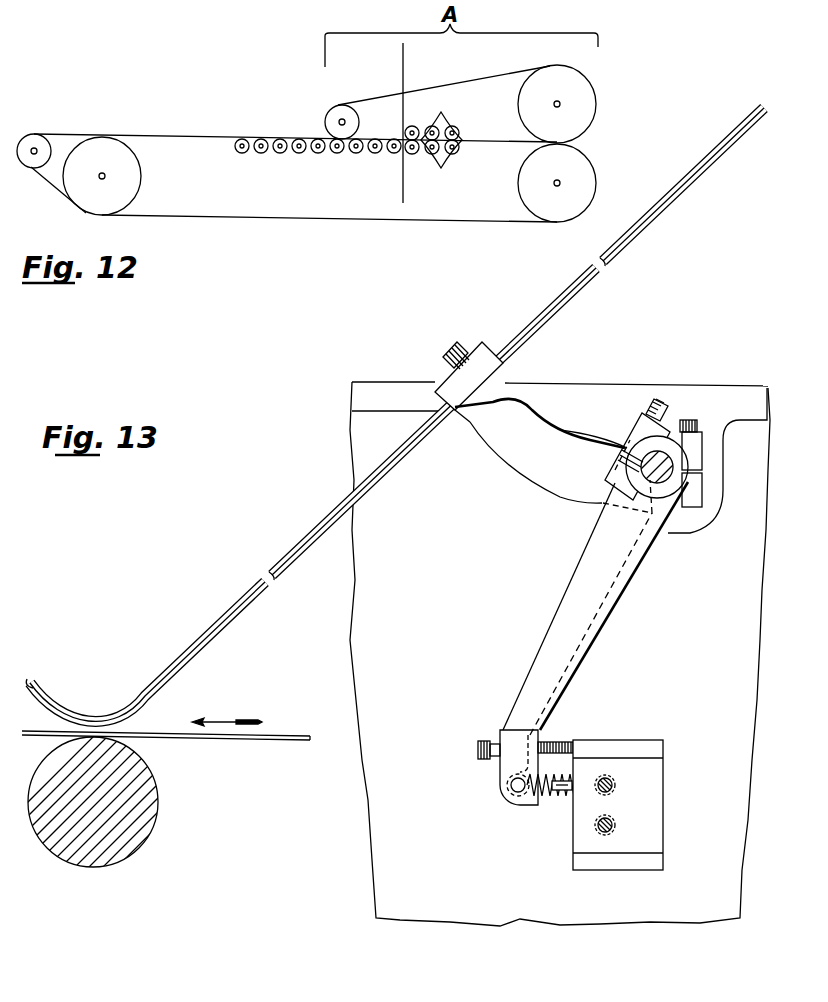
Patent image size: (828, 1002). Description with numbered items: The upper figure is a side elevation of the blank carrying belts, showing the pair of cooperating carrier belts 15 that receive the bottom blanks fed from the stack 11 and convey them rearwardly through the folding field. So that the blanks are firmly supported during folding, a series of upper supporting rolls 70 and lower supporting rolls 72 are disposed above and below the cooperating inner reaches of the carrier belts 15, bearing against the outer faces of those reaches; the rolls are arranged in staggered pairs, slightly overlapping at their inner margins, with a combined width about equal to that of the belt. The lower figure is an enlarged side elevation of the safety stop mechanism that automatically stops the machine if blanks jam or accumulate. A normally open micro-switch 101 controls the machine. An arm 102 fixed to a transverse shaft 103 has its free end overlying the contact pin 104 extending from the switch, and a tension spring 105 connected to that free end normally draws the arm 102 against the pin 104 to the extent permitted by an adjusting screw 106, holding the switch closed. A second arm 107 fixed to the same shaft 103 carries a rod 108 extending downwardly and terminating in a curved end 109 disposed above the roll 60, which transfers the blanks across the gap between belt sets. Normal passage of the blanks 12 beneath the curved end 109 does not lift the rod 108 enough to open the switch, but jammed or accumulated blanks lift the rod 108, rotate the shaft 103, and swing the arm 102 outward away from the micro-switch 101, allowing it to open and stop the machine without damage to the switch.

In FIG. 12, the stack 11 is at (399, 63).
In FIG. 12, the carrier belts 15 is at (200, 134).
In FIG. 12, the upper supporting rolls 70 is at (441, 130).
In FIG. 12, the lower supporting rolls 72 is at (247, 153).
In FIG. 13, the blanks 12 is at (305, 741).
In FIG. 13, the roll 60 is at (145, 787).
In FIG. 13, the micro-switch 101 is at (650, 807).
In FIG. 13, the arm 102 is at (581, 578).
In FIG. 13, the transverse shaft 103 is at (600, 505).
In FIG. 13, the contact pin 104 is at (548, 796).
In FIG. 13, the tension spring 105 is at (558, 800).
In FIG. 13, the adjusting screw 106 is at (562, 741).
In FIG. 13, the second arm 107 is at (515, 444).
In FIG. 13, the rod 108 is at (327, 526).
In FIG. 13, the curved end 109 is at (60, 712).